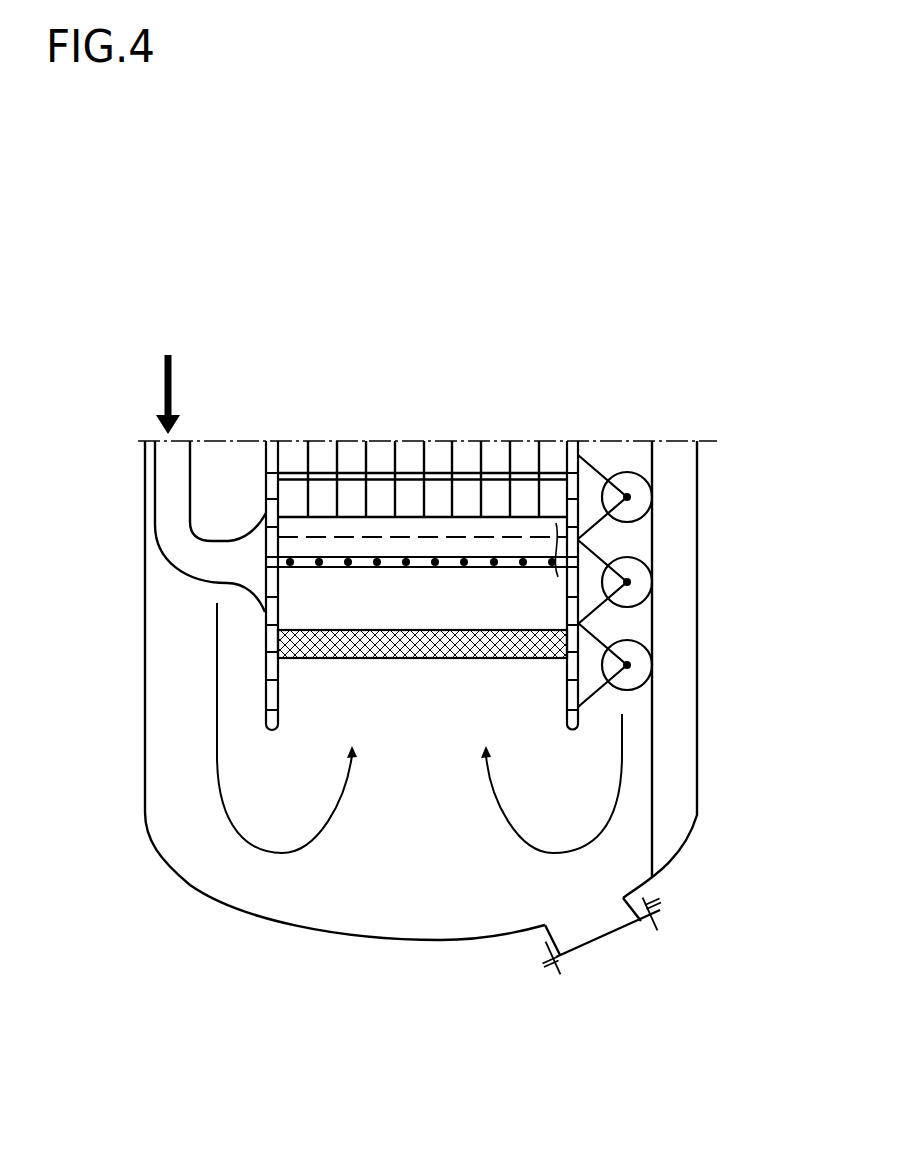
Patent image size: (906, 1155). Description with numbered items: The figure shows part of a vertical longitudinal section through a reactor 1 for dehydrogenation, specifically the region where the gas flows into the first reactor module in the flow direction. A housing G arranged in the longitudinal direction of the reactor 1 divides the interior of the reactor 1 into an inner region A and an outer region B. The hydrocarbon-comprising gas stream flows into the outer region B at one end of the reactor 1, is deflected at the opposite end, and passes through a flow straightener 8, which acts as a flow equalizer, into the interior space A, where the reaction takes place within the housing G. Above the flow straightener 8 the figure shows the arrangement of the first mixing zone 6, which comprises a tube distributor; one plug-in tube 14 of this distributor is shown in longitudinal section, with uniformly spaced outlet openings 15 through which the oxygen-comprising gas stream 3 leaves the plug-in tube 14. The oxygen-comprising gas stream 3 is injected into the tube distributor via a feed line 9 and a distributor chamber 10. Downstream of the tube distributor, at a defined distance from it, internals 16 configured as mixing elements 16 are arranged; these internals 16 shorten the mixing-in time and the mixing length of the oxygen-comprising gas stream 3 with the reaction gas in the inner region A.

The reactor 1 is at (713, 765).
The oxygen-comprising gas stream 3 is at (168, 390).
The mixing zone 6 is at (562, 550).
The flow straightener 8 is at (543, 660).
The feed line 9 is at (153, 483).
The distributor chamber 10 is at (252, 522).
The plug-in tube 14 is at (327, 548).
The outlet openings 15 is at (378, 548).
The internals 16 is at (464, 537).
The inner region A is at (543, 597).
The outer region B is at (158, 608).
The housing G is at (267, 670).